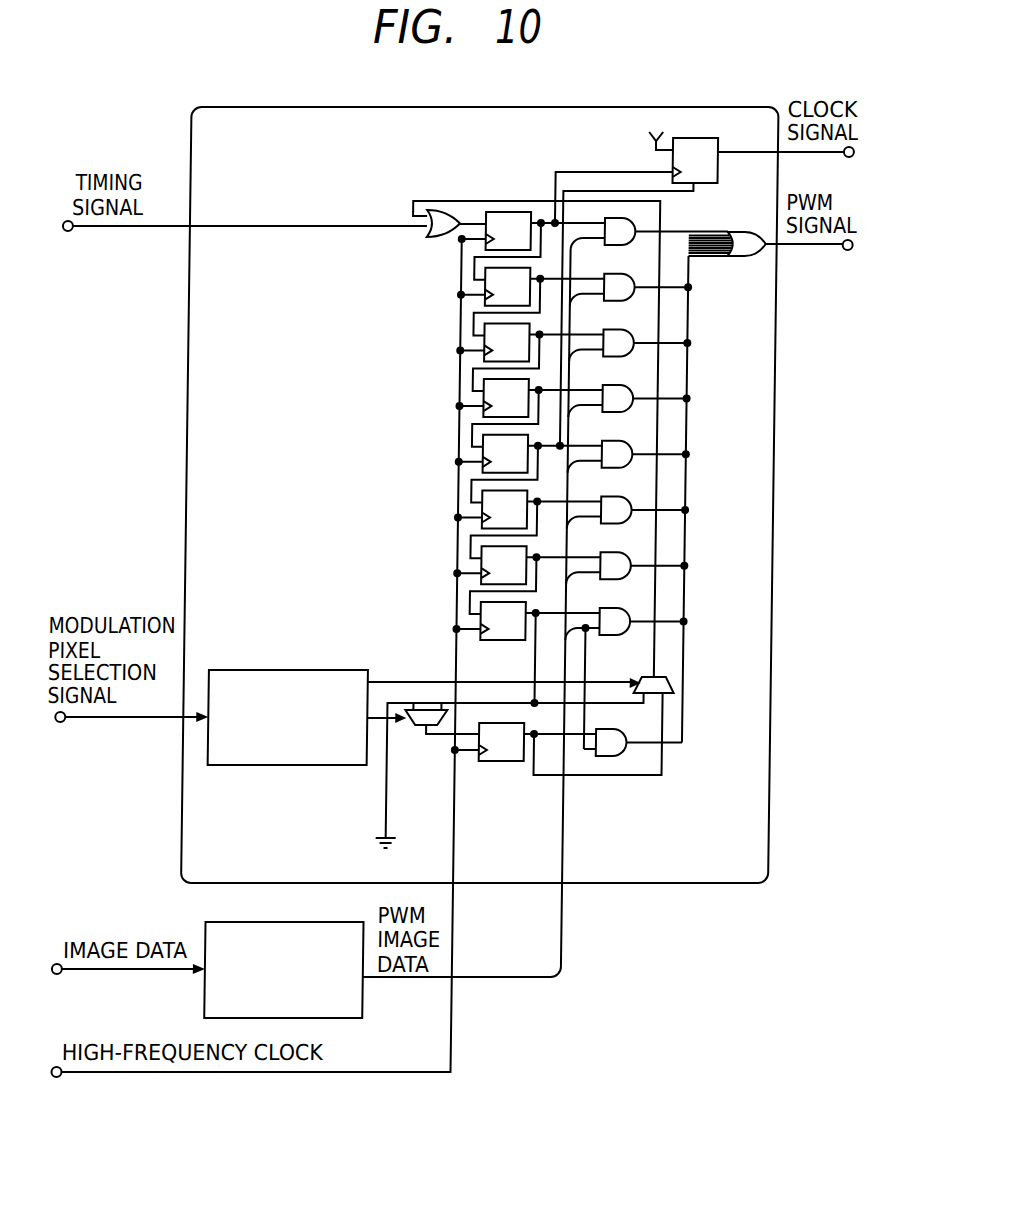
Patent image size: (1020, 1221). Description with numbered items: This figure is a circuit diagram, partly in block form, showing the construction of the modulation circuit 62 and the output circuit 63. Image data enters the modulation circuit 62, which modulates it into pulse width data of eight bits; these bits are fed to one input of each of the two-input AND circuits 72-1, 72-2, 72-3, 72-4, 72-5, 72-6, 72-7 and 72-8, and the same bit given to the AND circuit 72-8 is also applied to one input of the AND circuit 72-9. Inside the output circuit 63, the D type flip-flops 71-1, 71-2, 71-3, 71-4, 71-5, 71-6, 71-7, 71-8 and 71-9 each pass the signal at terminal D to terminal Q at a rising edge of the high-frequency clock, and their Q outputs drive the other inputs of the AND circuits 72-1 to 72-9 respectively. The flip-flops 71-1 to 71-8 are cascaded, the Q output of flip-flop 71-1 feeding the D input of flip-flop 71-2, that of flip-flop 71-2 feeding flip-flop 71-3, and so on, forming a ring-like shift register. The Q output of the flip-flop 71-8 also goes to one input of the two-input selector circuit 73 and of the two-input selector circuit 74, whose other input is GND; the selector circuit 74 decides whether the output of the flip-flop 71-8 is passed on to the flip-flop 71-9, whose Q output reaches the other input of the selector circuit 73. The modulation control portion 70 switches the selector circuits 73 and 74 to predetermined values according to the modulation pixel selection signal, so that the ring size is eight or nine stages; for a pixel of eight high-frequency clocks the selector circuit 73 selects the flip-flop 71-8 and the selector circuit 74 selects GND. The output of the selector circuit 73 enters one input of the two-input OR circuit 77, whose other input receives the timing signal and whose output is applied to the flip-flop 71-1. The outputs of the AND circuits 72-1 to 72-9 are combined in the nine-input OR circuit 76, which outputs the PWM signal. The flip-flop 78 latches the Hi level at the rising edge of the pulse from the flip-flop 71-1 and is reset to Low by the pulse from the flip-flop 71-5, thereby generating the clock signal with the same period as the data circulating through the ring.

The output circuit 63 is at (240, 106).
The modulation control portion 70 is at (254, 670).
The modulation circuit 62 is at (373, 1002).
The 2-inputs selector circuit 73 is at (652, 677).
The 2-inputs selector circuit 74 is at (430, 727).
The 9-inputs OR circuit 76 is at (745, 232).
The 2-inputs OR circuit 77 is at (436, 212).
The flip-flop 78 is at (720, 140).
The D type flip-flop 71-1 is at (499, 212).
The D type flip-flop 71-2 is at (476, 280).
The D type flip-flop 71-3 is at (476, 335).
The D type flip-flop 71-4 is at (476, 391).
The D type flip-flop 71-5 is at (476, 447).
The D type flip-flop 71-6 is at (476, 502).
The D type flip-flop 71-7 is at (476, 558).
The D type flip-flop 71-8 is at (476, 614).
The D type flip-flop 71-9 is at (505, 762).
The 2-inputs AND circuit 72-1 is at (614, 218).
The 2-inputs AND circuit 72-2 is at (642, 292).
The 2-inputs AND circuit 72-3 is at (642, 348).
The 2-inputs AND circuit 72-4 is at (642, 403).
The 2-inputs AND circuit 72-5 is at (642, 459).
The 2-inputs AND circuit 72-6 is at (642, 515).
The 2-inputs AND circuit 72-7 is at (642, 570).
The 2-inputs AND circuit 72-8 is at (642, 626).
The 2-inputs AND circuit 72-9 is at (615, 757).